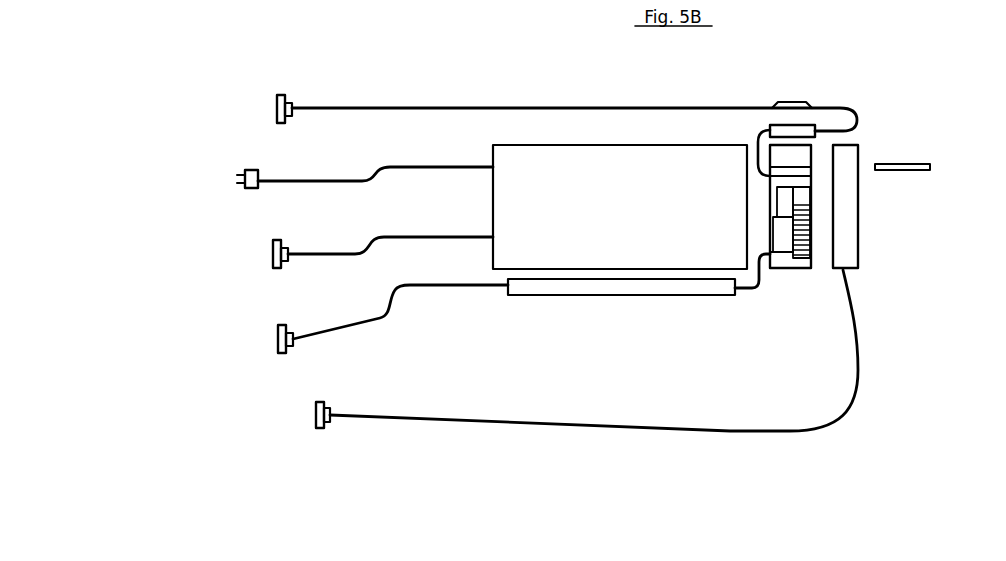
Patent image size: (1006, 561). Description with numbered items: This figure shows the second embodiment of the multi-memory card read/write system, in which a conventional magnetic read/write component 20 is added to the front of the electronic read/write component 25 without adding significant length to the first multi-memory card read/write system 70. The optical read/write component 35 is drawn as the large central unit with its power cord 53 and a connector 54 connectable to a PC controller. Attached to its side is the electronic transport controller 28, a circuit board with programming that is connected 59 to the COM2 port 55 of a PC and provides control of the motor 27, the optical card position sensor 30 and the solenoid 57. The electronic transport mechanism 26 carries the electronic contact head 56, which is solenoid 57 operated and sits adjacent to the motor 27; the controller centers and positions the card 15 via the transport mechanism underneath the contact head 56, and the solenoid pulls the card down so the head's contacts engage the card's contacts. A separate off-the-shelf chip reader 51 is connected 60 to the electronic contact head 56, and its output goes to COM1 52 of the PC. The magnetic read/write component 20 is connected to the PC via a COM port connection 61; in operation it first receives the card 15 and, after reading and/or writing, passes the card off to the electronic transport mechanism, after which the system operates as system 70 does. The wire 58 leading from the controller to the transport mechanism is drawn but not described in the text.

The card 15 is at (915, 163).
The magnetic read/write component 20 is at (852, 143).
The electronic read/write component 25 is at (790, 102).
The electronic transport mechanism 26 is at (815, 272).
The motor 27 is at (783, 230).
The electronic transport controller 28 is at (603, 296).
The optical card position sensor 30 is at (782, 195).
The optical read/write component 35 is at (563, 144).
The chip reader 51 is at (812, 131).
The COM1 52 is at (273, 100).
The power cord 53 is at (243, 187).
The connector 54 is at (270, 254).
The COM2 port 55 is at (275, 339).
The electronic contact head 56 is at (802, 198).
The solenoid 57 is at (803, 262).
The wire 58 is at (750, 290).
The connection 59 is at (383, 323).
The connection 60 is at (757, 130).
The COM port connection 61 is at (313, 414).
The first multi-memory card read/write system 70 is at (512, 106).